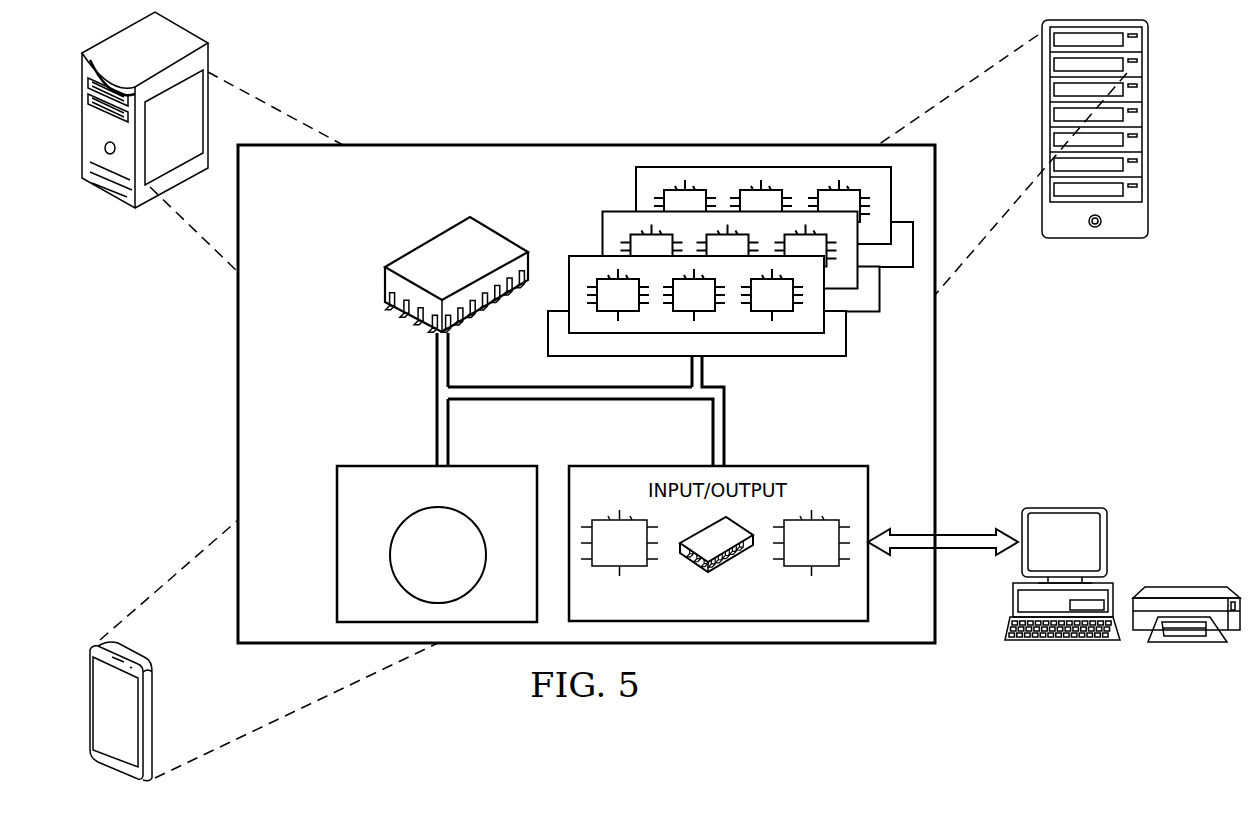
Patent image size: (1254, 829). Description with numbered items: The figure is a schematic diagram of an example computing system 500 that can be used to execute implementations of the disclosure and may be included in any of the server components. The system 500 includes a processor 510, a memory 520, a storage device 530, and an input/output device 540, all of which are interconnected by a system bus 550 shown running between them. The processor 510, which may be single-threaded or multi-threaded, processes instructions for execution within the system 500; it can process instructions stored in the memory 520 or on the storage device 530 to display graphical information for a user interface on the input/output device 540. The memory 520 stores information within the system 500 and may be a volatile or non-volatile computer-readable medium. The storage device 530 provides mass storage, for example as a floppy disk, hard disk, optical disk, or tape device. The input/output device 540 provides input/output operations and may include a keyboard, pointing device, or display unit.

The computing system 500 is at (418, 80).
The processor 510 is at (428, 242).
The memory 520 is at (790, 358).
The storage device 530 is at (337, 543).
The input/output device 540 is at (1062, 644).
The system bus 550 is at (582, 400).